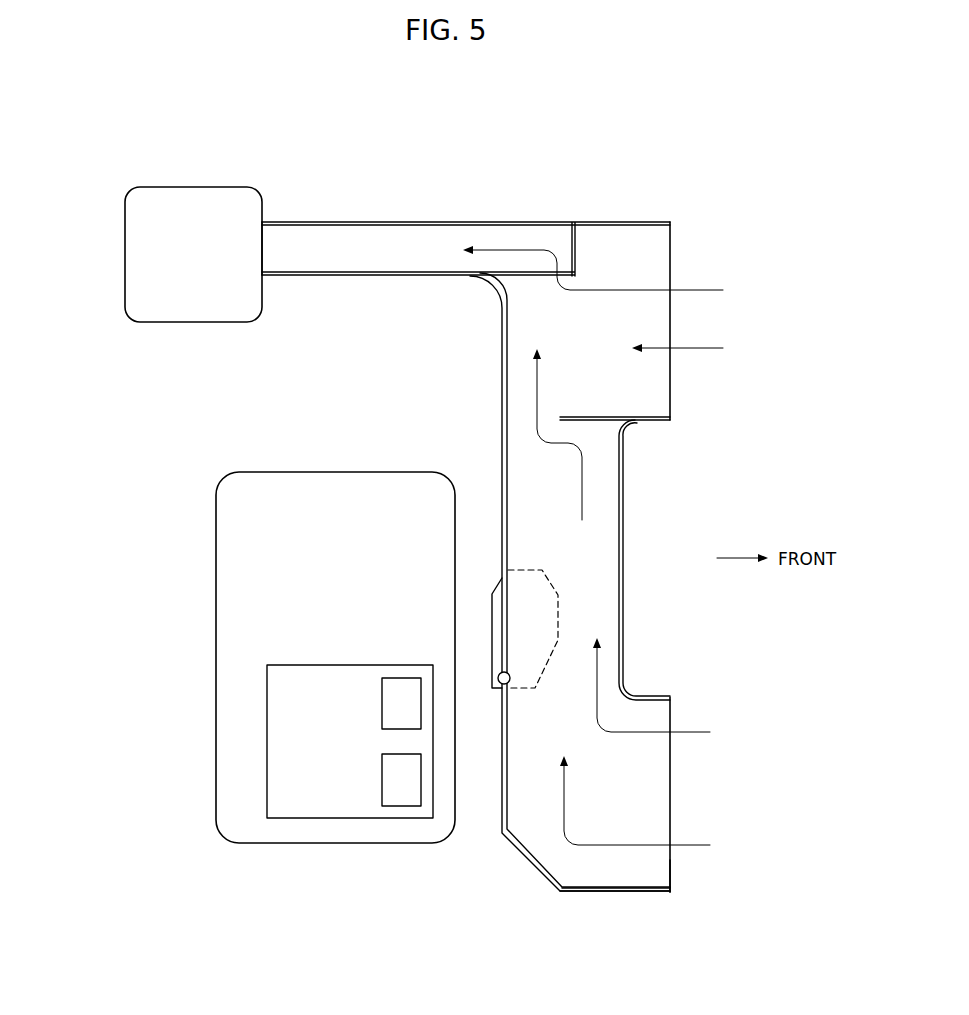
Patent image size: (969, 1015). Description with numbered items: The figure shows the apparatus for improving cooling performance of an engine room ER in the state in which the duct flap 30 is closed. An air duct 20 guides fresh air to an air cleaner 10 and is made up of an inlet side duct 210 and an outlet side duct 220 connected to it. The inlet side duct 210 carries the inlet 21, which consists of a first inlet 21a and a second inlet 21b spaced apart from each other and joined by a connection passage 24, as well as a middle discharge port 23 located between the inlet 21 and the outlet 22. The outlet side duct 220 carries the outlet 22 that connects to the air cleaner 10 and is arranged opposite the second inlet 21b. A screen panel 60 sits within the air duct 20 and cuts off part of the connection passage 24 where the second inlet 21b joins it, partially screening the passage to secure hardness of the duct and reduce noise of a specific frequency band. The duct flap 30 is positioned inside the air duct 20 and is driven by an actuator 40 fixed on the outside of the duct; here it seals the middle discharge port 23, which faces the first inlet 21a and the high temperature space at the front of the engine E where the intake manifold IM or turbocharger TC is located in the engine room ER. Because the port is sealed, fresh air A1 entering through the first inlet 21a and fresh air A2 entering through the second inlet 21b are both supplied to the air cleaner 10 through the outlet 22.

The air cleaner 10 is at (125, 253).
The air duct 20 is at (593, 200).
The inlet 21 is at (671, 716).
The first inlet 21a is at (670, 866).
The second inlet 21b is at (672, 253).
The outlet 22 is at (262, 243).
The middle discharge port 23 is at (502, 833).
The connection passage 24 is at (606, 477).
The duct flap 30 is at (502, 790).
The actuator 40 is at (545, 592).
The screen panel 60 is at (598, 417).
The inlet side duct 210 is at (612, 893).
The outlet side duct 220 is at (388, 221).
The engine room ER is at (216, 570).
The engine E is at (267, 778).
The turbocharger TC is at (382, 702).
The intake manifold IM is at (382, 781).
The fresh air introduced through the first inlet A1 is at (621, 597).
The fresh air introduced through the second inlet A2 is at (593, 258).